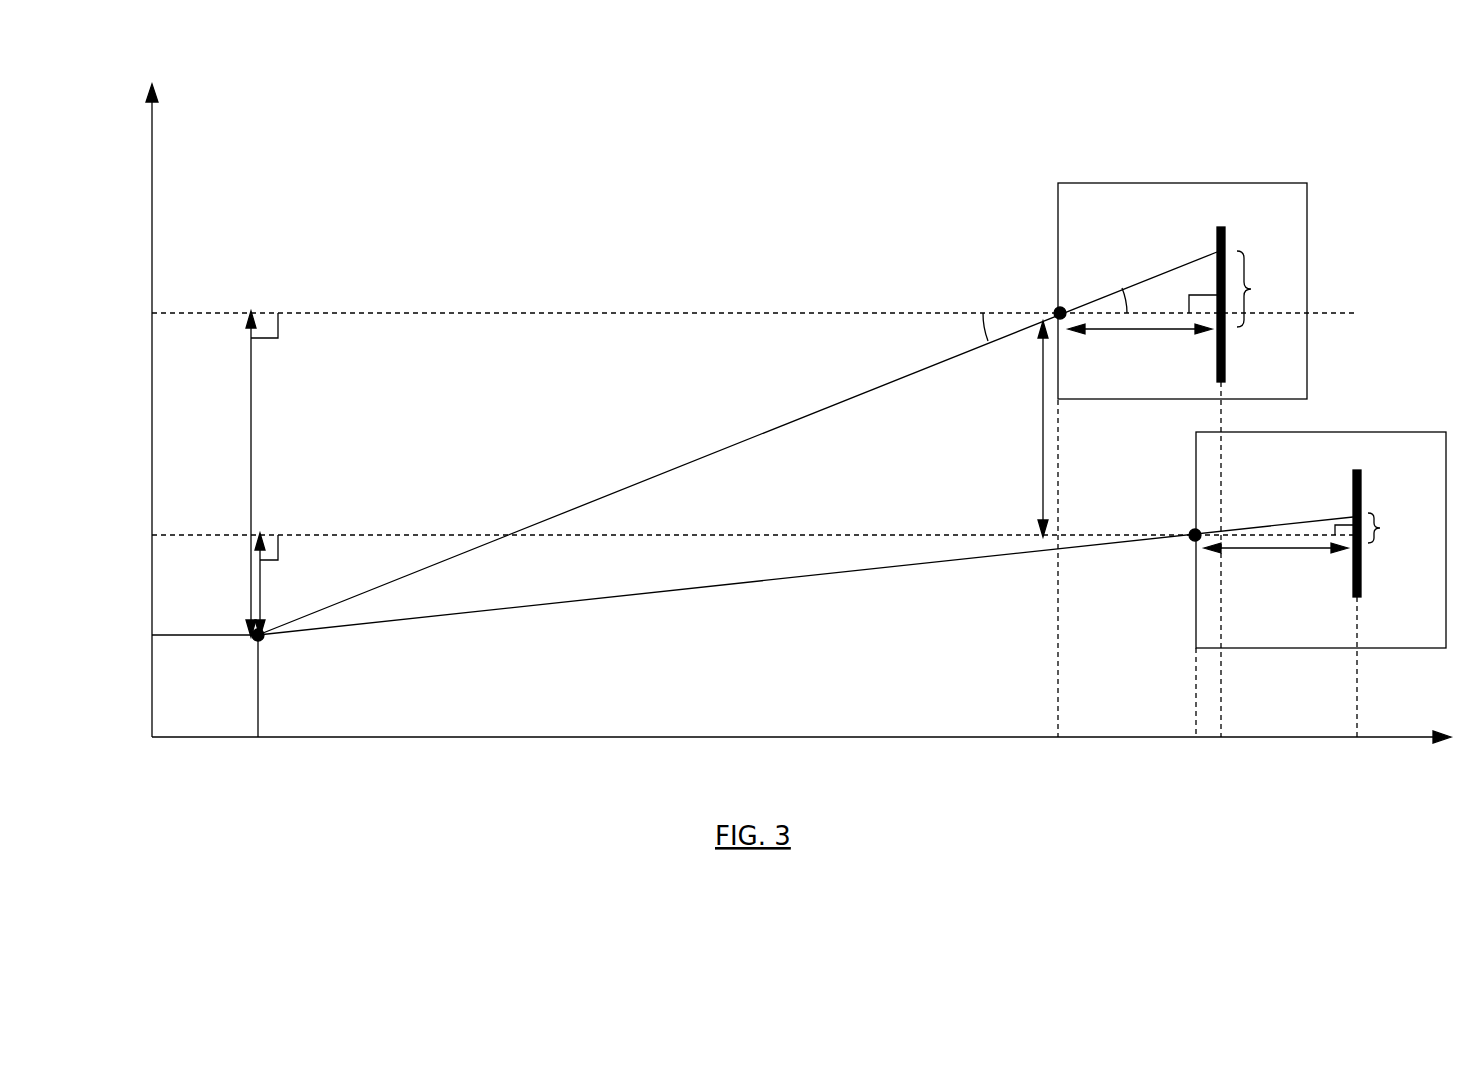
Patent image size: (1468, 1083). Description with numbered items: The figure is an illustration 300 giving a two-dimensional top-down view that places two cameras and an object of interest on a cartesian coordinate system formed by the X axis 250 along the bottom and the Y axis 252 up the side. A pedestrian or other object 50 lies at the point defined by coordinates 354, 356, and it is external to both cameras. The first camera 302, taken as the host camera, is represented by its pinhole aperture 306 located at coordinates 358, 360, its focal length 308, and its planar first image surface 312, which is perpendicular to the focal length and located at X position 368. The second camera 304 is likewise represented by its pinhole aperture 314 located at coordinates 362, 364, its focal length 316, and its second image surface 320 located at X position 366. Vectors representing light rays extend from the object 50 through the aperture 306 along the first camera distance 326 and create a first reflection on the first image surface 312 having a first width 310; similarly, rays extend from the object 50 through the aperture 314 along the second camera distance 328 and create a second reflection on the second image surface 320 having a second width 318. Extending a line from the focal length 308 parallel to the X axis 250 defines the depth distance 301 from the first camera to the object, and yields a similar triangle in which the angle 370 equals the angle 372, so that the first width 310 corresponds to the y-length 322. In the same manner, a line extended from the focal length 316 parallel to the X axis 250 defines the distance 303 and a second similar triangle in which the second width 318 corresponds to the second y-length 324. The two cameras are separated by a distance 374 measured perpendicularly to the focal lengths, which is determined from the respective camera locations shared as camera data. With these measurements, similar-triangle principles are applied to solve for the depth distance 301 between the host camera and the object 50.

The object 50 is at (264, 640).
The x-axis 250 is at (1290, 737).
The y-axis 252 is at (152, 156).
The illustration 300 is at (648, 185).
The distance D 301 is at (508, 313).
The camera 1 302 is at (1102, 183).
The distance 303 is at (358, 535).
The camera 2 304 is at (1286, 648).
The pinhole aperture 306 is at (1057, 309).
The focal length 1 308 is at (1140, 332).
The width 1 310 is at (1271, 289).
The image 1 surface 312 is at (1226, 242).
The pinhole aperture 314 is at (1193, 532).
The focal length 2 316 is at (1283, 553).
The width 2 318 is at (1403, 528).
The image 2 surface 320 is at (1362, 494).
The y_length 322 is at (251, 410).
The second y_length 324 is at (262, 590).
The camera 1 distance CD1 326 is at (708, 447).
The camera 2 distance CD2 328 is at (752, 582).
The X coordinate of object 354 is at (258, 740).
The Y coordinate of object 356 is at (175, 636).
The X coordinate of aperture 306 358 is at (1058, 589).
The Y coordinate of aperture 306 360 is at (723, 314).
The X coordinate of aperture 314 362 is at (1193, 713).
The Y coordinate of aperture 314 364 is at (723, 536).
The X location of image 2 surface 366 is at (1361, 687).
The X location of image 1 surface 368 is at (1221, 737).
The angle 370 is at (983, 322).
The angle 372 is at (1130, 295).
The distance between cameras 374 is at (1043, 452).